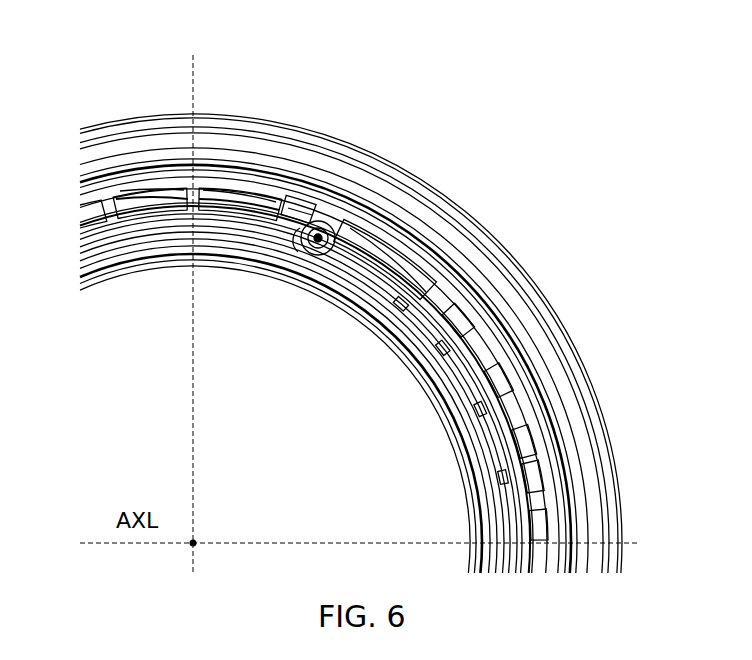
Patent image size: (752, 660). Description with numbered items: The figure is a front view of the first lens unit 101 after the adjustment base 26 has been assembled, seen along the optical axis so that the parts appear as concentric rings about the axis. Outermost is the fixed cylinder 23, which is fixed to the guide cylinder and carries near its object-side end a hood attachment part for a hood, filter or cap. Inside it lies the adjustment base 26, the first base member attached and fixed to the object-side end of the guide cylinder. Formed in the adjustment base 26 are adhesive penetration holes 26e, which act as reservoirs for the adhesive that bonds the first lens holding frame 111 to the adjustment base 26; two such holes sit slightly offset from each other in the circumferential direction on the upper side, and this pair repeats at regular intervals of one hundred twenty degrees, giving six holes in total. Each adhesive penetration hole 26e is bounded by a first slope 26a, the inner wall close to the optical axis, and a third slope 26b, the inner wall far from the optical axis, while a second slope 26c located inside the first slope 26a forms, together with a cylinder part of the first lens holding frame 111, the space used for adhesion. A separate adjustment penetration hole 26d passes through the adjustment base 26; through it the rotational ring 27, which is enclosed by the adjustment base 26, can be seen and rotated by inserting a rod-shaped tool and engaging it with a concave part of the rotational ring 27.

The fixed cylinder 23 is at (133, 130).
The adjustment base 26 is at (205, 187).
The first slope 26a is at (300, 207).
The third slope 26b is at (260, 213).
The second slope 26c is at (340, 228).
The adjustment penetration hole 26d is at (483, 350).
The adhesive penetration hole 26e is at (150, 187).
The rotational ring 27 is at (510, 400).
The first lens unit 101 is at (455, 290).
The first lens holding frame 111 is at (320, 380).